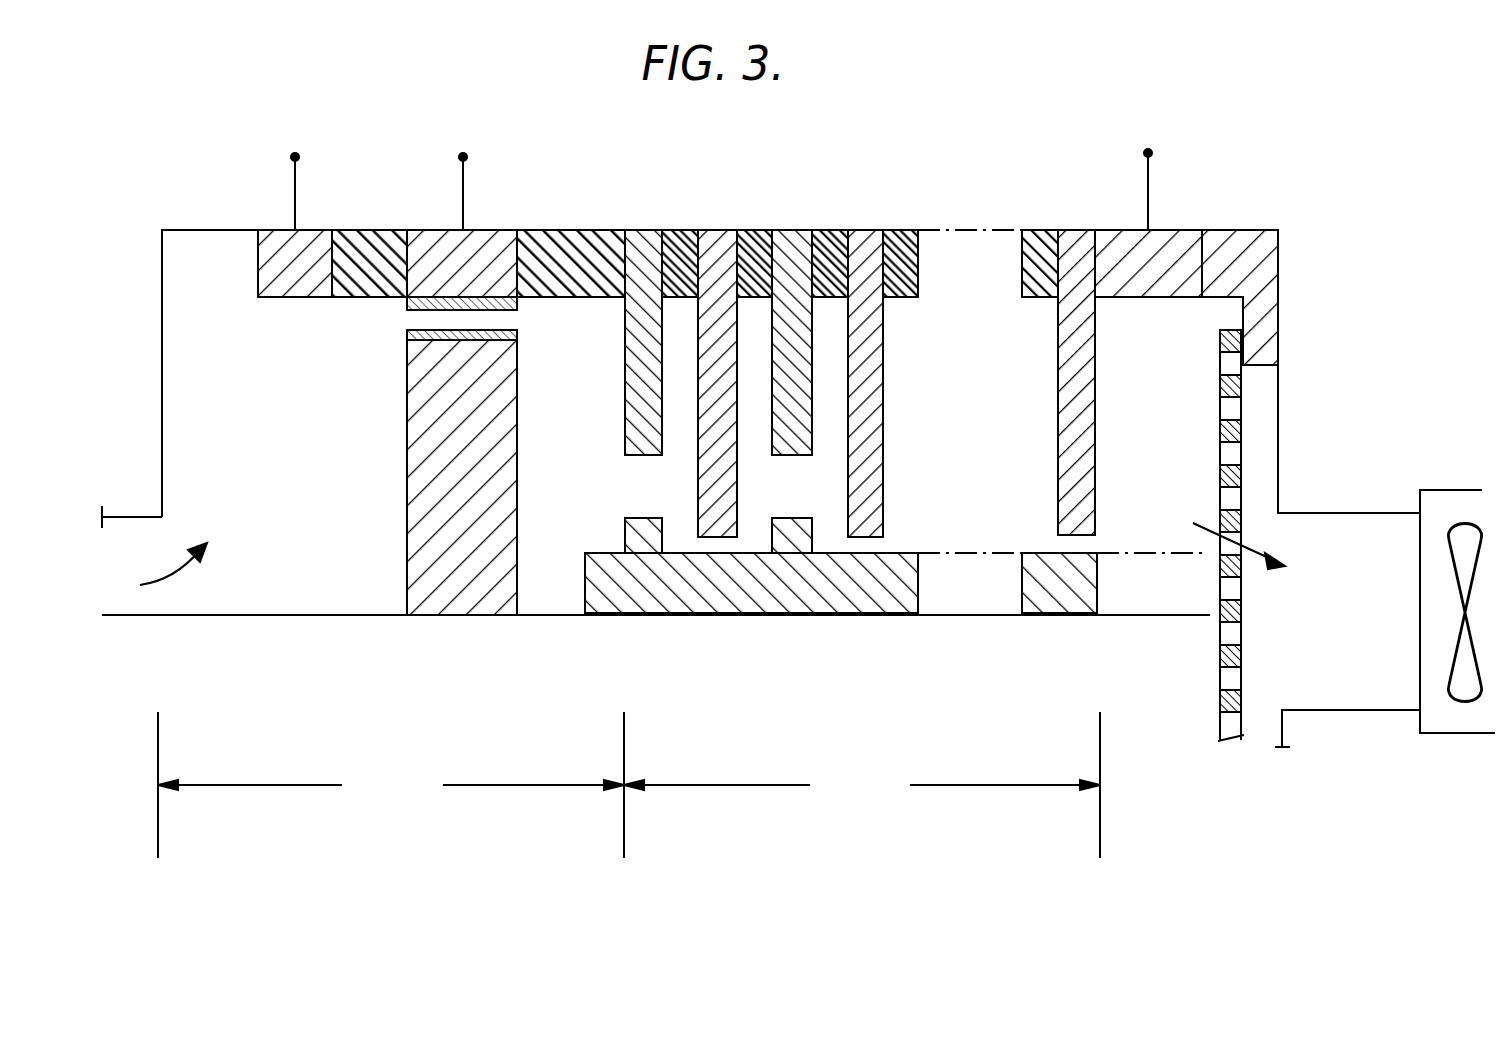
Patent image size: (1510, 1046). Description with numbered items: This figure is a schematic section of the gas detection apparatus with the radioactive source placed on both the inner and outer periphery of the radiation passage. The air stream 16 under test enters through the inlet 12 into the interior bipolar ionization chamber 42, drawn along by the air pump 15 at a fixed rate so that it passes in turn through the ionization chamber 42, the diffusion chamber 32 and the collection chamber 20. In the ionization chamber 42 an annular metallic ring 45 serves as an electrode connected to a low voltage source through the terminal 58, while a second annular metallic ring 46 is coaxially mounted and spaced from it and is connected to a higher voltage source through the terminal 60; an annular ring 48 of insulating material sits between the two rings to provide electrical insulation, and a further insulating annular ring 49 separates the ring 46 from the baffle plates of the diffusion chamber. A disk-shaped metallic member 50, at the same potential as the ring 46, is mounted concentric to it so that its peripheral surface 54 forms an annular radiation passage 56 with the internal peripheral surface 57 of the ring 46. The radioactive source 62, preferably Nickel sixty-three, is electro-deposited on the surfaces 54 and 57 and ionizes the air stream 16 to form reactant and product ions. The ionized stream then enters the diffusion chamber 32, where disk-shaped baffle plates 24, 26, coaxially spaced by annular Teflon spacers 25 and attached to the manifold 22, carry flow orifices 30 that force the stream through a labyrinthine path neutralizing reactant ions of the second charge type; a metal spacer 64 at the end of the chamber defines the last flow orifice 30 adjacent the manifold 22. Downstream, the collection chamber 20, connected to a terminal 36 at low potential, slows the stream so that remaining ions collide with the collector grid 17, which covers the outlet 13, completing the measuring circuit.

The inlet 12 is at (127, 517).
The outlet 13 is at (1315, 513).
The air pump 15 is at (1450, 490).
The air stream 16 is at (155, 573).
The collector grid 17 is at (1243, 468).
The collection chamber 20 is at (1185, 350).
The manifold 22 is at (860, 595).
The baffle plates 24 is at (640, 230).
The annular Teflon spacers 25 is at (675, 230).
The baffle plates 26 is at (714, 230).
The flow orifices 30 is at (630, 490).
The diffusion chamber 32 is at (838, 762).
The terminal 36 is at (1148, 153).
The bipolar ionization chamber 42 is at (382, 752).
The annular metallic ring 45 is at (297, 297).
The annular metallic ring 46 is at (490, 230).
The annular ring 48 is at (356, 230).
The annular ring 49 is at (575, 230).
The disk-shaped metallic member 50 is at (500, 505).
The peripheral surface 54 is at (405, 335).
The annular radiation passage 56 is at (500, 320).
The internal peripheral surface 57 is at (517, 300).
The terminal 58 is at (297, 155).
The terminal 60 is at (465, 155).
The radioactive source 62 is at (405, 305).
The metal spacer 64 is at (1072, 230).